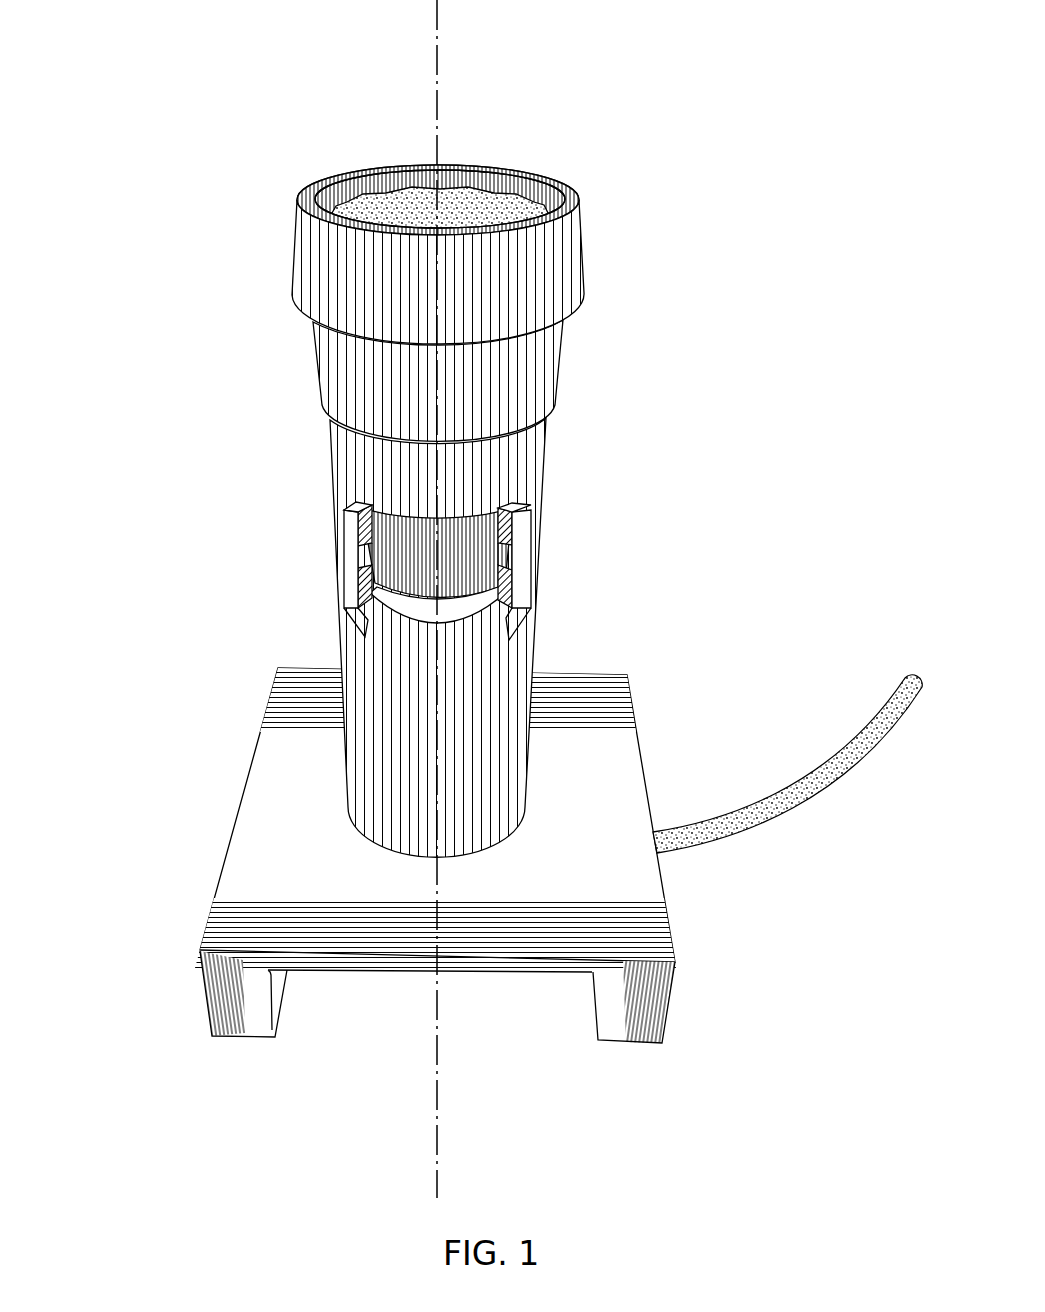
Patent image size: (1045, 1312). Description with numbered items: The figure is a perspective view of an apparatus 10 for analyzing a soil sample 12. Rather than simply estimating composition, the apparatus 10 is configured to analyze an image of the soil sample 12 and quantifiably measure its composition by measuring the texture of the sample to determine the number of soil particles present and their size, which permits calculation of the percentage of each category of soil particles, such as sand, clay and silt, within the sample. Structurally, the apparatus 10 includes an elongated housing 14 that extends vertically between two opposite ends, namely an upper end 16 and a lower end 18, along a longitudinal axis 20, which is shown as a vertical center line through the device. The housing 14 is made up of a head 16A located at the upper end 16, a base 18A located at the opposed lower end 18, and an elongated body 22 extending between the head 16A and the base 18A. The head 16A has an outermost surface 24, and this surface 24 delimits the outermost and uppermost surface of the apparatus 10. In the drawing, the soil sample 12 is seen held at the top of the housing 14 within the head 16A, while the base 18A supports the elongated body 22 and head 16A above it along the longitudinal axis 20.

The apparatus 10 is at (180, 143).
The soil sample 12 is at (482, 193).
The elongated housing 14 is at (262, 303).
The upper end 16 is at (583, 265).
The head 16A is at (327, 173).
The lower end 18 is at (492, 855).
The base 18A is at (200, 952).
The longitudinal axis 20 is at (435, 1155).
The elongated body 22 is at (335, 543).
The outermost surface 24 is at (565, 193).